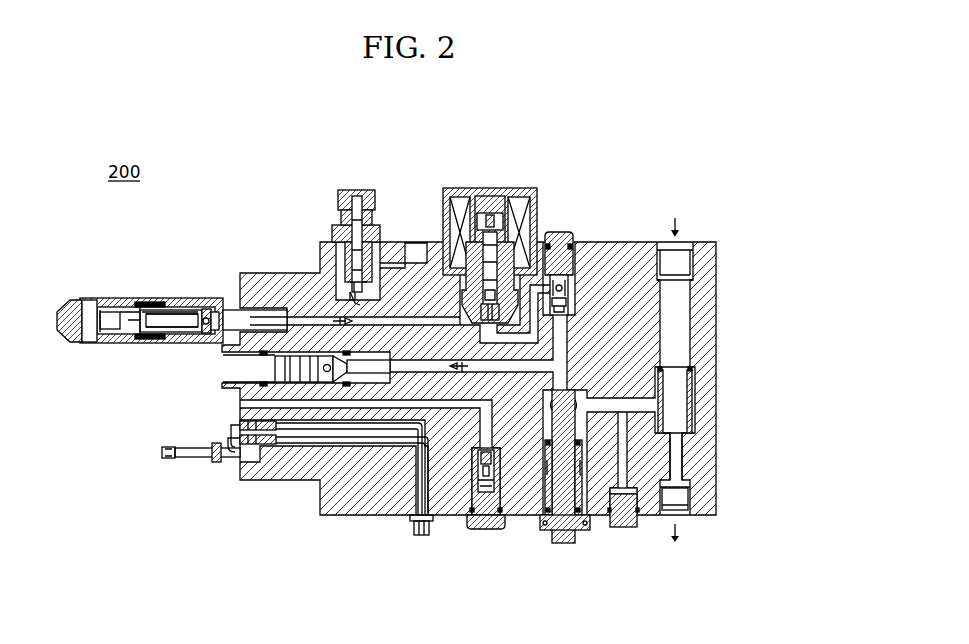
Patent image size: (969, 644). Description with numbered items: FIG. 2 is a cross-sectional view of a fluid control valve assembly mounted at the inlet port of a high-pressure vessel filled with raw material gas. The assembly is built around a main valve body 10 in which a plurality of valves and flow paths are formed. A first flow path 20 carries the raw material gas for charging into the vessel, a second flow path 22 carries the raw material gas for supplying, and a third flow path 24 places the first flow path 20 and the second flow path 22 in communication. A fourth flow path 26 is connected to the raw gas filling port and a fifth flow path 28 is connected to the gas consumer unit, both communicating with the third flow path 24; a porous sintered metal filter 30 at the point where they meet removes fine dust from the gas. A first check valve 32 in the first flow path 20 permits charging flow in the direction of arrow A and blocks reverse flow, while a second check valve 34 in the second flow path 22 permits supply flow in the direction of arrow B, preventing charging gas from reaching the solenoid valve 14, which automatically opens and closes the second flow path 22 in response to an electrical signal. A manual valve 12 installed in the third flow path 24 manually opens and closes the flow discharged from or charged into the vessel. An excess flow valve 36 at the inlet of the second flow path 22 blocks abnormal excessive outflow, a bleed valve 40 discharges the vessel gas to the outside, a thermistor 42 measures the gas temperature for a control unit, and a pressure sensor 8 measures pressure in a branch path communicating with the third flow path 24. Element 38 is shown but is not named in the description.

The pressure sensor 8 is at (631, 528).
The main valve body 10 is at (640, 250).
The manual valve 12 is at (539, 492).
The solenoid valve 14 is at (549, 210).
The first flow path 20 is at (412, 372).
The second flow path 22 is at (303, 320).
The third flow path 24 is at (645, 405).
The fourth flow path 26 is at (675, 318).
The fifth flow path 28 is at (678, 462).
The filter 30 is at (701, 415).
The first check valve 32 is at (310, 384).
The second check valve 34 is at (569, 237).
The excess flow valve 36 is at (161, 294).
The control valve 38 is at (320, 210).
The bleed valve 40 is at (481, 540).
The thermistor 42 is at (192, 460).
The arrow A is at (462, 372).
The arrow B is at (360, 305).